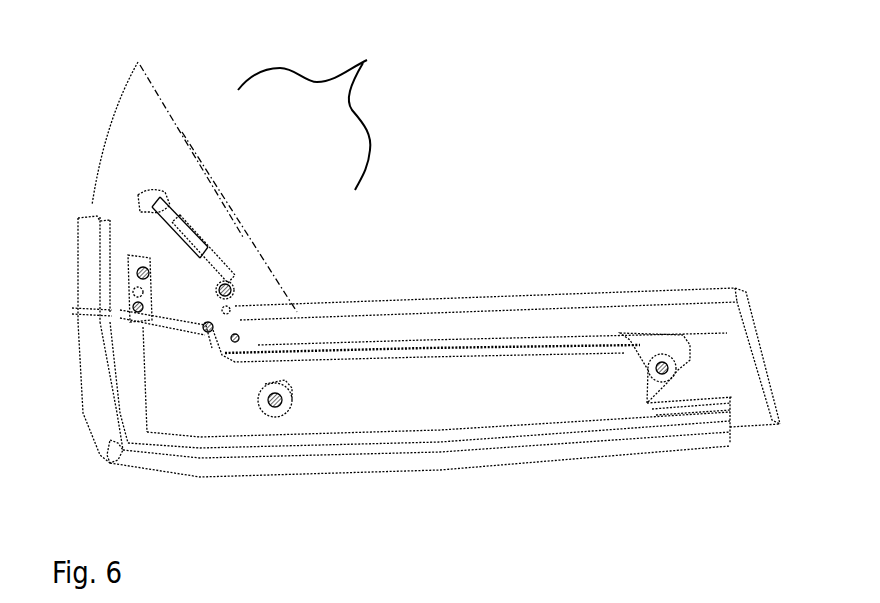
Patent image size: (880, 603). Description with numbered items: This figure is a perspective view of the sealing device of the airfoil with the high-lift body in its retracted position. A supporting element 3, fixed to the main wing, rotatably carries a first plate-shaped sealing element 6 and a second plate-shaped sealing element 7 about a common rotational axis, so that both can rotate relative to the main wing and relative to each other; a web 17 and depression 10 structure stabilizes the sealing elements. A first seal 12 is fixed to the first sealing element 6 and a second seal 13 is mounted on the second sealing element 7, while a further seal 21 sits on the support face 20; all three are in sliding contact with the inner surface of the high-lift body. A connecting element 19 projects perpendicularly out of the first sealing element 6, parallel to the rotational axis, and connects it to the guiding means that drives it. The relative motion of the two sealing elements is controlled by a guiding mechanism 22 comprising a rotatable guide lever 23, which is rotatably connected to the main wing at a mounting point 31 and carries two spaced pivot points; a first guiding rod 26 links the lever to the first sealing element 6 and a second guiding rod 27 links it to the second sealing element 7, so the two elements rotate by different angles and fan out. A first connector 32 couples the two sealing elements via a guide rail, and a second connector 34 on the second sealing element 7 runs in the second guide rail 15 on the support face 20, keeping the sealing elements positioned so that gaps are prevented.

The supporting element 3 is at (663, 362).
The first plate-shaped sealing element 6 is at (508, 392).
The second plate-shaped sealing element 7 is at (232, 340).
The depression 10 is at (432, 392).
The first seal 12 is at (82, 392).
The second seal 13 is at (83, 307).
The second guide rail 15 is at (146, 270).
The web 17 is at (463, 408).
The connecting element 19 is at (290, 388).
The support face 20 is at (154, 164).
The seal 21 is at (77, 252).
The guiding mechanism 22 is at (317, 106).
The rotatable guide lever 23 is at (222, 249).
The first guiding rod 26 is at (167, 250).
The second guiding rod 27 is at (233, 338).
The mounting point 31 is at (227, 308).
The first connector 32 is at (138, 307).
The second connector 34 is at (143, 276).